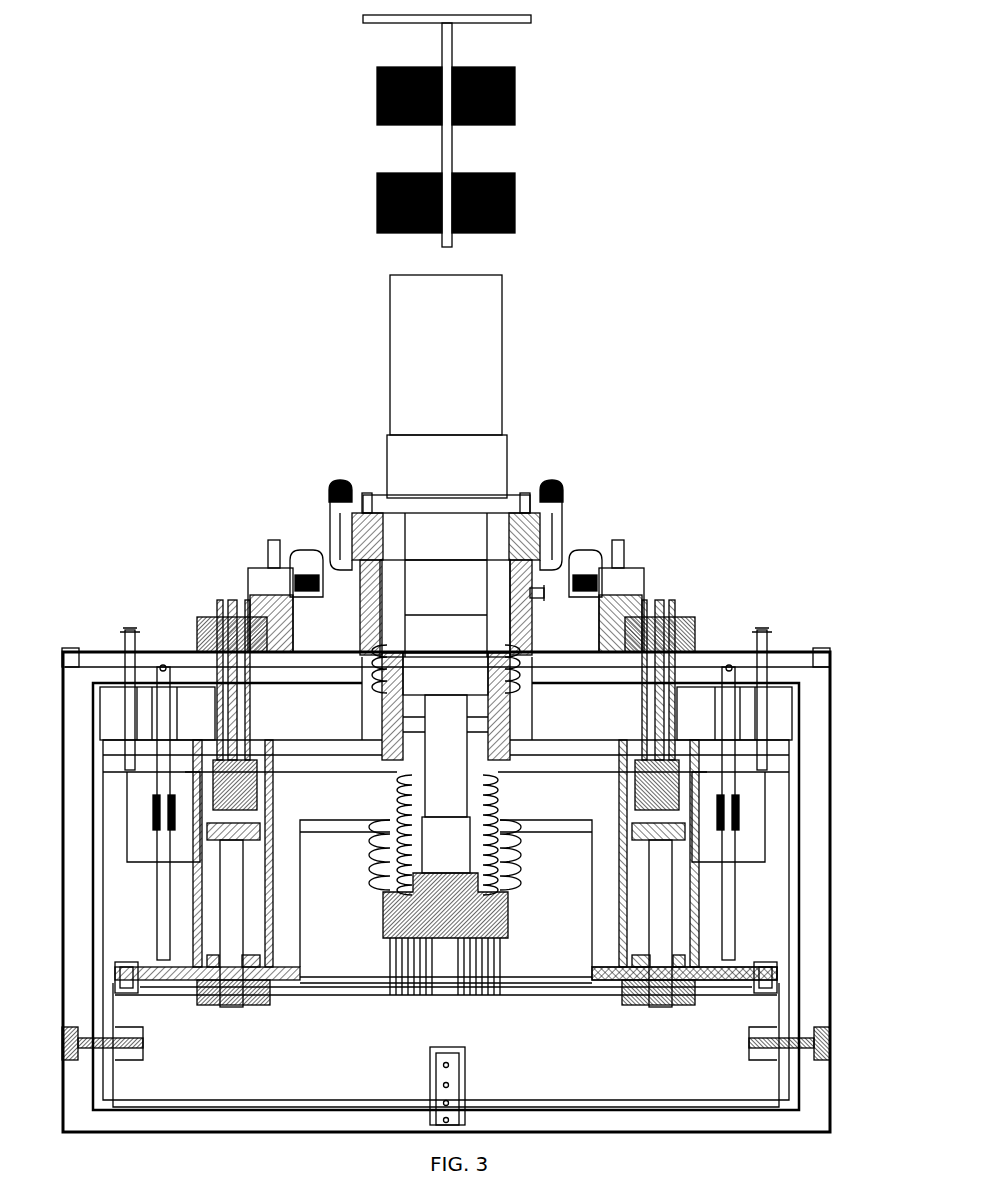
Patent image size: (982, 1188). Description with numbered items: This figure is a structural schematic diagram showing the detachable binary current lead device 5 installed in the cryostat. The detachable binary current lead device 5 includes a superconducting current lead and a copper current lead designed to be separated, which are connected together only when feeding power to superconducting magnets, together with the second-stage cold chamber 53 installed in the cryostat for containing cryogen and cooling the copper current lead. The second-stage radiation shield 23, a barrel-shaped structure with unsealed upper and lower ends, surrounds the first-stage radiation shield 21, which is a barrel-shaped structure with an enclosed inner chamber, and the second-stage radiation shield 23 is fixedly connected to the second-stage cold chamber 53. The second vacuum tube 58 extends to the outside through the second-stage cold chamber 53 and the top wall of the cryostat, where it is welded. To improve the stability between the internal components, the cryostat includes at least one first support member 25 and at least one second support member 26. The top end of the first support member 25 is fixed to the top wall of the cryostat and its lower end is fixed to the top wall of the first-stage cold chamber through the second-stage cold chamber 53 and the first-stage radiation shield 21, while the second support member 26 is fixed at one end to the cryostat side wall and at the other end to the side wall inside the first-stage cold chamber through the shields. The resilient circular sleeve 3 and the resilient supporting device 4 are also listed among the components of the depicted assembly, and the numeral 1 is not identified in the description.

The drive cylinder 1 is at (502, 348).
The resilient circular sleeve 3 is at (385, 615).
The resilient supporting device 4 is at (540, 512).
The detachable binary current lead device 5 is at (695, 640).
The first-stage radiation shield 21 is at (787, 893).
The second-stage radiation shield 23 is at (798, 942).
The first support member 25 is at (735, 875).
The second support member 26 is at (765, 1035).
The second-stage cold chamber 53 is at (785, 700).
The second vacuum tube 58 is at (770, 795).